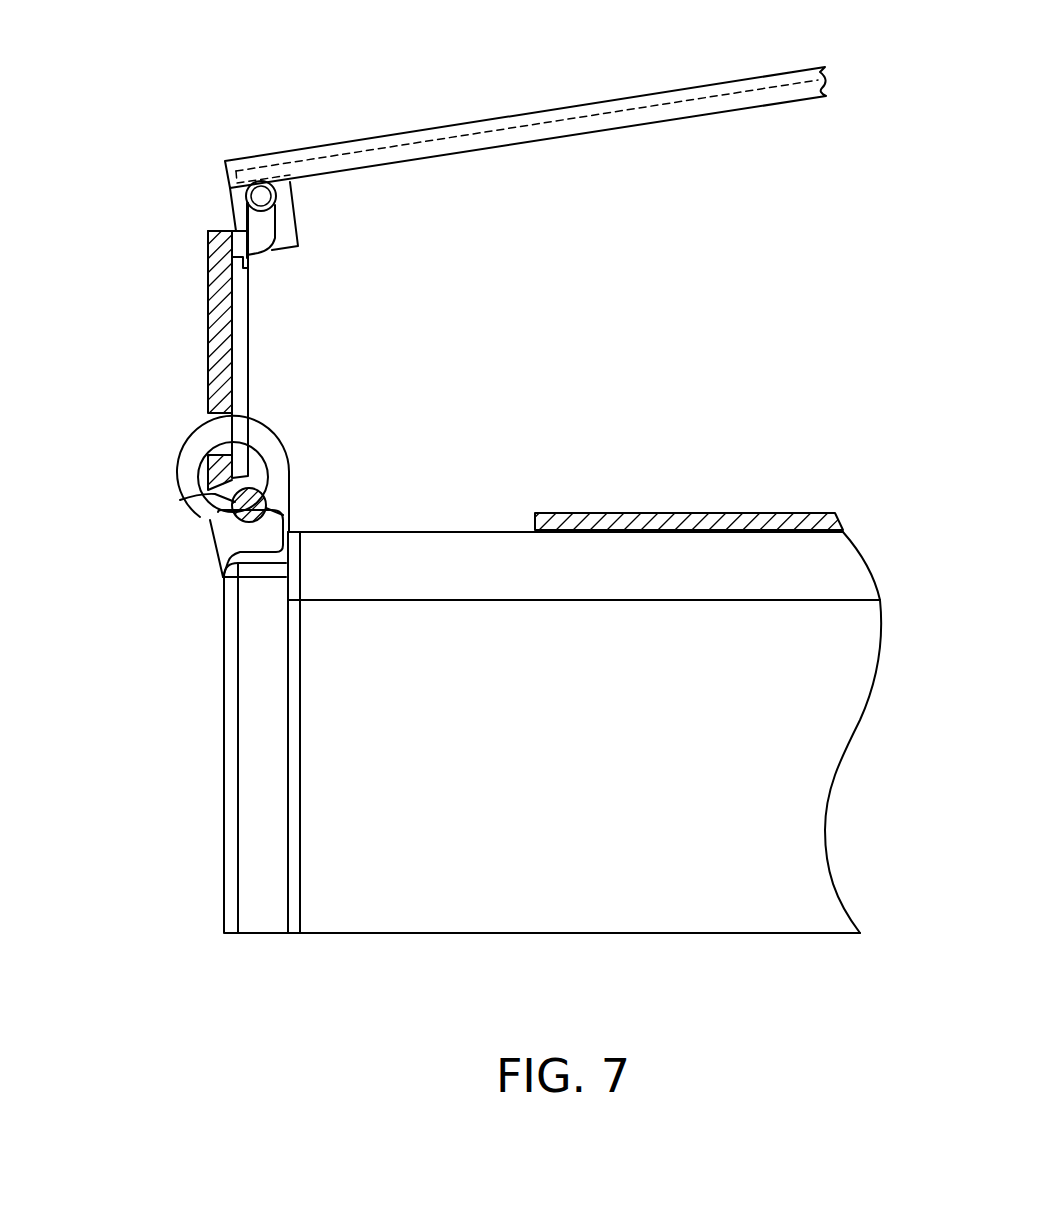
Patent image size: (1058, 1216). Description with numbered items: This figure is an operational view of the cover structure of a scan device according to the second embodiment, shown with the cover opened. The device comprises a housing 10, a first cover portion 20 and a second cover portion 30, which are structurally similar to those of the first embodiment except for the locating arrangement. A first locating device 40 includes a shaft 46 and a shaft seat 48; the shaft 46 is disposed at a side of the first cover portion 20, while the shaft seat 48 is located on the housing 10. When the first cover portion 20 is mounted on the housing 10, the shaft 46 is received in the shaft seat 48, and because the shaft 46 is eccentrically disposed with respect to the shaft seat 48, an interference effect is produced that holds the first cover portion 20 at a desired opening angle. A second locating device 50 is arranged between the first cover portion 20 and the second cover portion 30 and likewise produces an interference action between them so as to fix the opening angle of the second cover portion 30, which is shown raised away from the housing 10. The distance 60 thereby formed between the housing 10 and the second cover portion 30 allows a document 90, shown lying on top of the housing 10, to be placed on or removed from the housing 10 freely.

The housing 10 is at (270, 853).
The first cover portion 20 is at (205, 318).
The second cover portion 30 is at (515, 114).
The first locating device 40 is at (100, 520).
The shaft 46 is at (197, 497).
The shaft seat 48 is at (248, 540).
The second locating device 50 is at (305, 218).
The distance 60 is at (644, 341).
The document 90 is at (690, 515).